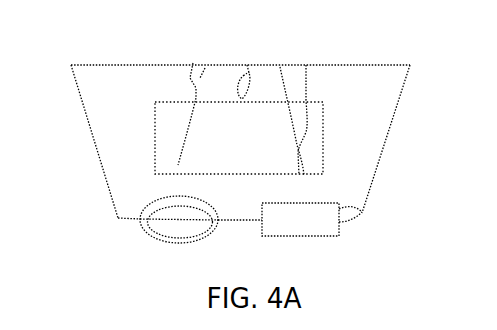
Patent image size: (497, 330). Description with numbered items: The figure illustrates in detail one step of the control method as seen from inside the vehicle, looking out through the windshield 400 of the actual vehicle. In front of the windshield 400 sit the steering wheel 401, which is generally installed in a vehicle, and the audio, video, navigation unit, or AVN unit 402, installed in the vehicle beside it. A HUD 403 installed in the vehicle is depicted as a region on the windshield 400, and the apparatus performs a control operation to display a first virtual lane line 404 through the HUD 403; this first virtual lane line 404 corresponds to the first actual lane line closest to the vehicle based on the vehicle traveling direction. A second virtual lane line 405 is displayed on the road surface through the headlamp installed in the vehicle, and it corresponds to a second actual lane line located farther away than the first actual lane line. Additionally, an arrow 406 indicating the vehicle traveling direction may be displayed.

The windshield 400 is at (86, 160).
The steering wheel 401 is at (147, 206).
The audio, video, navigation (AVN) unit 402 is at (362, 212).
The HUD 403 is at (155, 118).
The first virtual lane line 404 is at (306, 65).
The second virtual lane line 405 is at (193, 63).
The arrow 406 is at (247, 65).